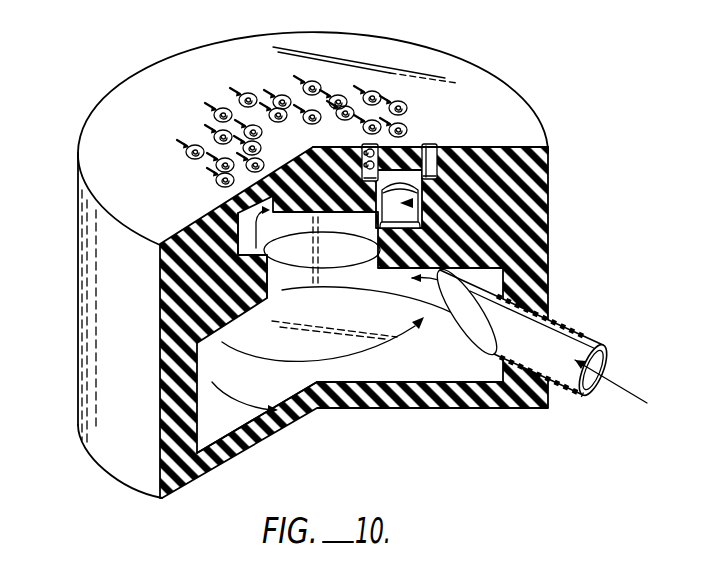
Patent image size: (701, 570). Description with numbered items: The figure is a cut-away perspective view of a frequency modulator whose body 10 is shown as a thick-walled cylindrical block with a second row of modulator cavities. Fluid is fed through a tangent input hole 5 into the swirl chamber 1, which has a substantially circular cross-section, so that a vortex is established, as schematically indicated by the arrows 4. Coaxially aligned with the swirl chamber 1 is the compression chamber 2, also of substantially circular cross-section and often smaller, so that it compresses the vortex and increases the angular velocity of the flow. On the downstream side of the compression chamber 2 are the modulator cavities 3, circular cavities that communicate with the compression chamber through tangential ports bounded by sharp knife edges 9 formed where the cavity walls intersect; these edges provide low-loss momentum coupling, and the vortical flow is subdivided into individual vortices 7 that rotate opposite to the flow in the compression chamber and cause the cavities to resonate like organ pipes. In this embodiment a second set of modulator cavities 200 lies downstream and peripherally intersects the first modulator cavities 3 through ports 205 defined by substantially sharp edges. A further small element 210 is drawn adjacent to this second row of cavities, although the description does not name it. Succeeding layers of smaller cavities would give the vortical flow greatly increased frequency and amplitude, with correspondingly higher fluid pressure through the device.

The swirl chamber 1 is at (226, 418).
The compression chamber 2 is at (282, 290).
The modulator cavities 3 is at (402, 188).
The arrows indicating vortex flow 4 is at (634, 394).
The tangent input hole 5 is at (581, 333).
The individual vortices 7 is at (233, 203).
The knife edges 9 is at (375, 231).
The housing 10 is at (115, 317).
The second set of modulator cavities 200 is at (433, 143).
The ports 205 is at (330, 149).
The tube 210 is at (371, 141).